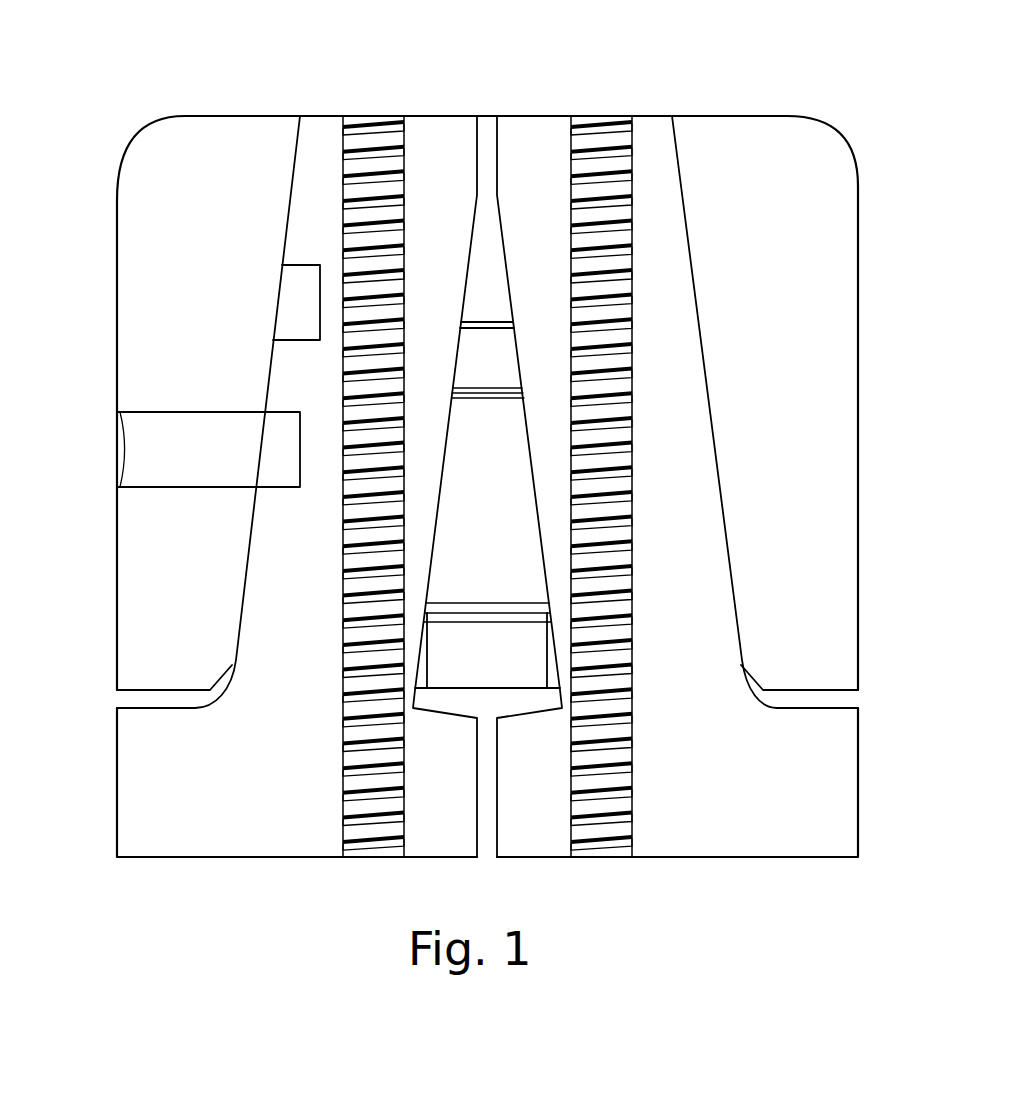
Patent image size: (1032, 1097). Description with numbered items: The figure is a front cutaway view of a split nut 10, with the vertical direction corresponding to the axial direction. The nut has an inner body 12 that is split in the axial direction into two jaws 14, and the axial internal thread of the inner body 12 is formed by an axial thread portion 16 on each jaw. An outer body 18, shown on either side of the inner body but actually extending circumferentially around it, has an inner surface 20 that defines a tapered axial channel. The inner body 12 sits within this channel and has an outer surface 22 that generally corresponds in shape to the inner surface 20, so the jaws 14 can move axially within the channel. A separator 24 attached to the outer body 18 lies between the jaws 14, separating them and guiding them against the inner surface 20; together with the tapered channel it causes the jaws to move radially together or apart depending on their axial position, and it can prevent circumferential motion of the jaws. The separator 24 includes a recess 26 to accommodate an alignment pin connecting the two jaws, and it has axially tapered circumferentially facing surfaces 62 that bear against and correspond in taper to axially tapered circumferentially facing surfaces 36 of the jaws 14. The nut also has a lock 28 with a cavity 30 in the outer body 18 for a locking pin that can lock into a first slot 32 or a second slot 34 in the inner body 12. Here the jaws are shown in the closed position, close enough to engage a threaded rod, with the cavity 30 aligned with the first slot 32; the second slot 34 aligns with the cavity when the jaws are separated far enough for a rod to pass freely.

The split nut 10 is at (821, 84).
The inner body 12 is at (243, 828).
The jaws 14 is at (703, 832).
The axial thread portion 16 is at (381, 840).
The outer body 18 is at (859, 508).
The inner surface 20 is at (308, 150).
The outer surface 22 is at (288, 190).
The separator 24 is at (485, 352).
The recess 26 is at (501, 565).
The lock 28 is at (117, 425).
The cavity 30 is at (122, 449).
The first slot 32 is at (300, 412).
The second slot 34 is at (308, 264).
The axially tapered circumferentially facing surfaces 36 is at (526, 460).
The axially tapered circumferentially facing surfaces 62 is at (519, 347).